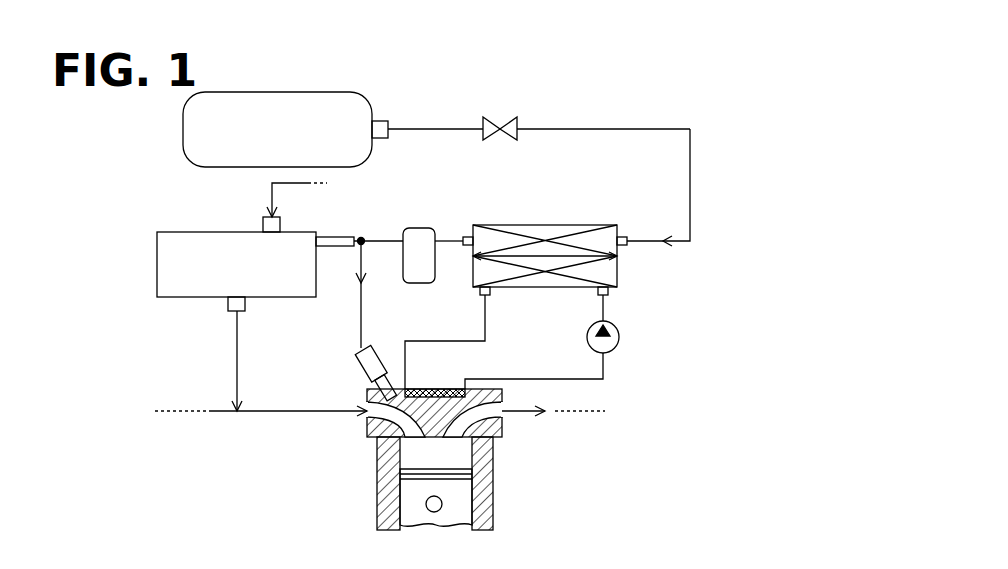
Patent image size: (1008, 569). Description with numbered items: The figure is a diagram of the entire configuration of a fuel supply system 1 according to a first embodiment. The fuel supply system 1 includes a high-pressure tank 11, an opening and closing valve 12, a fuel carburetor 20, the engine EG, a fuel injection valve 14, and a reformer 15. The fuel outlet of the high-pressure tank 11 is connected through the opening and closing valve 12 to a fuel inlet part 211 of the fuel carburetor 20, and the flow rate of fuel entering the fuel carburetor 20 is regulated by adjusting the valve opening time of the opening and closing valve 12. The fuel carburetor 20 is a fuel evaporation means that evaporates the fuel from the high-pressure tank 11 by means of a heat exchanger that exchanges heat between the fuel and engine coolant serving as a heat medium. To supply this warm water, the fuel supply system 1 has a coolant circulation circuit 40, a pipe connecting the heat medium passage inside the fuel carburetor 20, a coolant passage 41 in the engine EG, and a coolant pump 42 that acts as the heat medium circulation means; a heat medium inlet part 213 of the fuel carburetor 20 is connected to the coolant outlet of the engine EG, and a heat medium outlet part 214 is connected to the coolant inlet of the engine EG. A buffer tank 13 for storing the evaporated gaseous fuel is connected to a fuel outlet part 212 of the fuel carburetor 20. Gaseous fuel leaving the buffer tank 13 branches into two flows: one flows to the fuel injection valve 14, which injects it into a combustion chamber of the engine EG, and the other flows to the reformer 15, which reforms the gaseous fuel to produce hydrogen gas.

The fuel supply system 1 is at (575, 88).
The high-pressure tank 11 is at (262, 92).
The opening and closing valve 12 is at (505, 117).
The buffer tank 13 is at (419, 228).
The fuel injection valve 14 is at (360, 352).
The reformer 15 is at (225, 232).
The fuel carburetor 20 is at (582, 225).
The fuel inlet part 211 is at (630, 233).
The fuel outlet part 212 is at (459, 233).
The heat medium inlet part 213 is at (612, 293).
The heat medium outlet part 214 is at (482, 294).
The coolant circulation circuit 40 is at (490, 323).
The coolant passage 41 is at (428, 389).
The coolant pump 42 is at (612, 348).
The engine EG is at (368, 442).